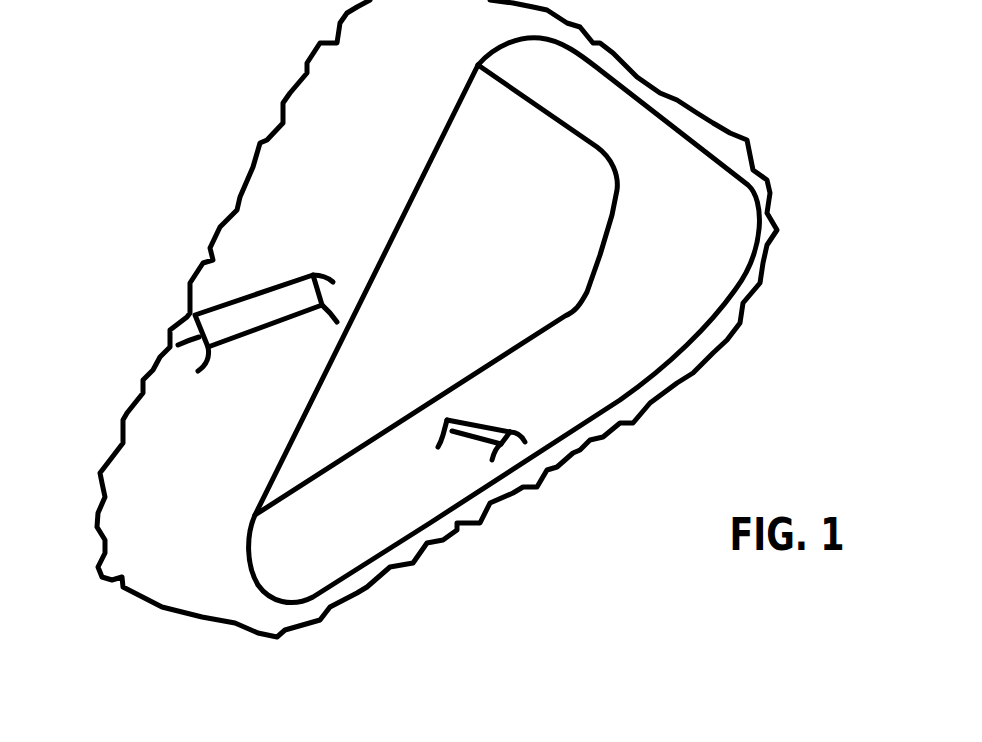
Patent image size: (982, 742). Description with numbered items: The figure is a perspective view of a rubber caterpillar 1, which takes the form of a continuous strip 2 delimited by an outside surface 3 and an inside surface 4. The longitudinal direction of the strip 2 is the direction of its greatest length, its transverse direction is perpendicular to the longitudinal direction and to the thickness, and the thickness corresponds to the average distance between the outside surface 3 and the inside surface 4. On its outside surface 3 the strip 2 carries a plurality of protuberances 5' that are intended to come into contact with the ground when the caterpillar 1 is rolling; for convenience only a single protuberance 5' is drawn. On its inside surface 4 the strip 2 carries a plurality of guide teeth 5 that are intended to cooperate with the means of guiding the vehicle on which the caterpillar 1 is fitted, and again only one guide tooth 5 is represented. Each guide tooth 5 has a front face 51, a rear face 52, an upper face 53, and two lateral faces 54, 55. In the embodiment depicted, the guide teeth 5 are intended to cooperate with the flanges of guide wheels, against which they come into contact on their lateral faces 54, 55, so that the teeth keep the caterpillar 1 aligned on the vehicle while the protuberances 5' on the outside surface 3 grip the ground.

The caterpillar 1 is at (152, 118).
The continuous strip 2 is at (677, 110).
The outside surface 3 is at (180, 433).
The inside surface 4 is at (575, 335).
The guide tooth 5 is at (547, 451).
The protuberance 5' is at (208, 323).
The front face 51 is at (468, 450).
The rear face 52 is at (512, 426).
The upper face 53 is at (493, 417).
The lateral face 54 is at (503, 447).
The lateral face 55 is at (440, 432).